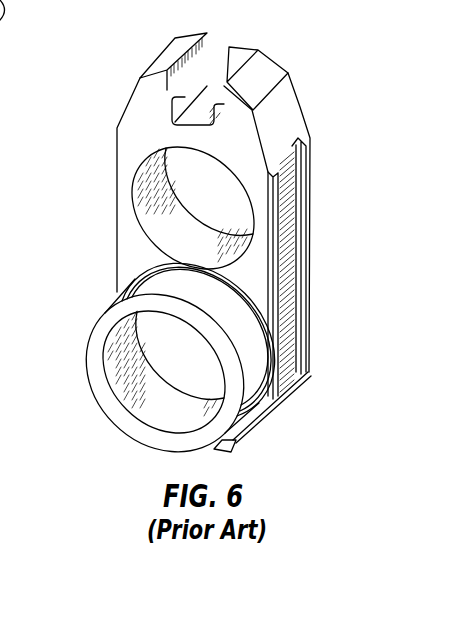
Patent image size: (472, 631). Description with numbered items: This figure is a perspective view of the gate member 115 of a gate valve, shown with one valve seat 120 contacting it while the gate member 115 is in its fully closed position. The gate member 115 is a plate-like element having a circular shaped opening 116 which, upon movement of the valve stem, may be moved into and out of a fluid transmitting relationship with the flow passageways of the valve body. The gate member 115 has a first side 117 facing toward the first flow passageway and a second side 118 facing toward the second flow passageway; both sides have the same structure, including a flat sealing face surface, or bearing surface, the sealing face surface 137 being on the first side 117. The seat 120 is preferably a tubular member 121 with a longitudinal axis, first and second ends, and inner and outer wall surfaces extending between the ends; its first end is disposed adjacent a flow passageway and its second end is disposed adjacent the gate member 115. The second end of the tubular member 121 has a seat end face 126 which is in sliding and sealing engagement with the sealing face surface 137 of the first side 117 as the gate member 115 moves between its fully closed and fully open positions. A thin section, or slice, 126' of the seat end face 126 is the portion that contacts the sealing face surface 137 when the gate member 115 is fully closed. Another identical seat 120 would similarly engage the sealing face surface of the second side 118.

The gate member 115 is at (262, 78).
The opening 116 is at (151, 207).
The first side 117 is at (125, 134).
The second side 118 is at (300, 107).
The sealing face surface 137 is at (130, 253).
The seat end face 126 is at (236, 348).
The thin section of the seat end face 126' is at (257, 339).
The tubular member 121 is at (115, 408).
The valve seat 120 is at (139, 447).